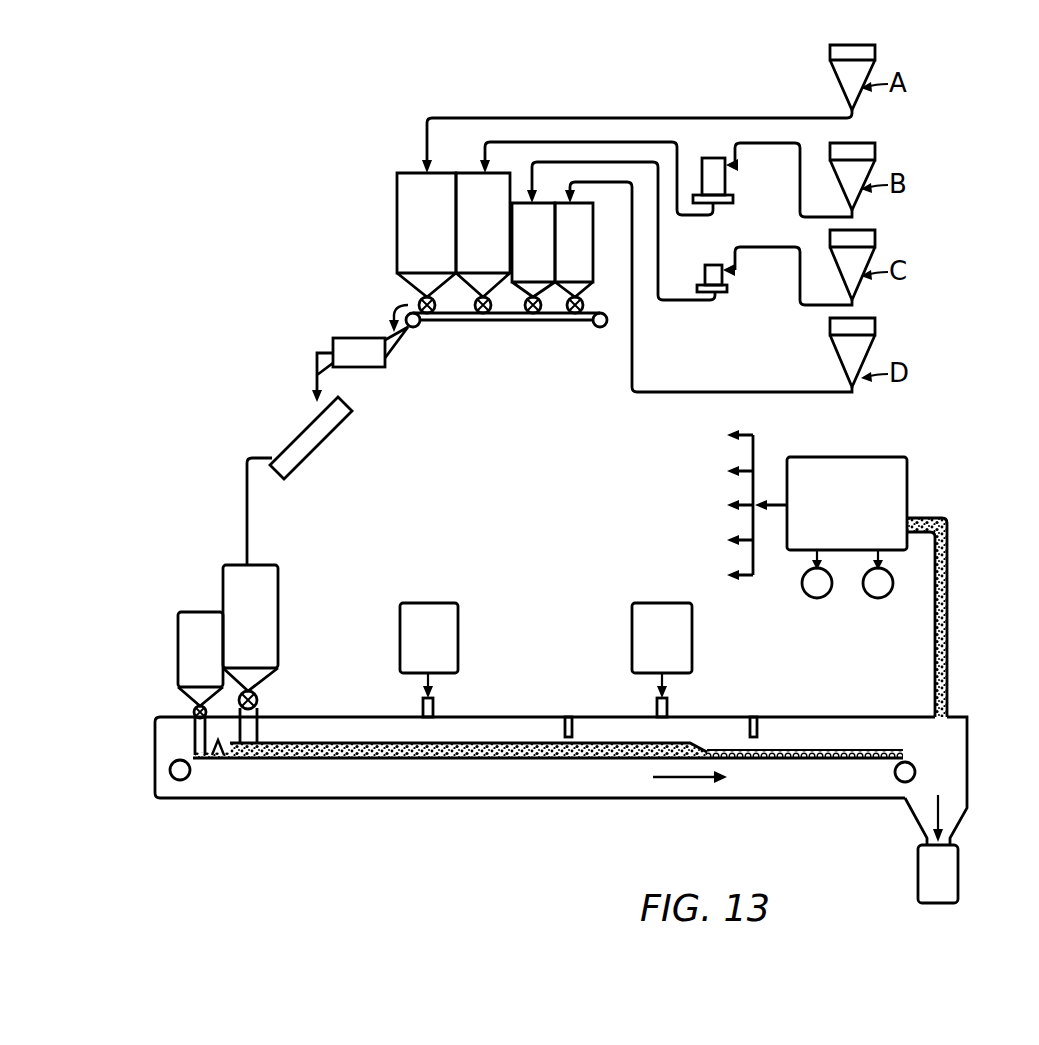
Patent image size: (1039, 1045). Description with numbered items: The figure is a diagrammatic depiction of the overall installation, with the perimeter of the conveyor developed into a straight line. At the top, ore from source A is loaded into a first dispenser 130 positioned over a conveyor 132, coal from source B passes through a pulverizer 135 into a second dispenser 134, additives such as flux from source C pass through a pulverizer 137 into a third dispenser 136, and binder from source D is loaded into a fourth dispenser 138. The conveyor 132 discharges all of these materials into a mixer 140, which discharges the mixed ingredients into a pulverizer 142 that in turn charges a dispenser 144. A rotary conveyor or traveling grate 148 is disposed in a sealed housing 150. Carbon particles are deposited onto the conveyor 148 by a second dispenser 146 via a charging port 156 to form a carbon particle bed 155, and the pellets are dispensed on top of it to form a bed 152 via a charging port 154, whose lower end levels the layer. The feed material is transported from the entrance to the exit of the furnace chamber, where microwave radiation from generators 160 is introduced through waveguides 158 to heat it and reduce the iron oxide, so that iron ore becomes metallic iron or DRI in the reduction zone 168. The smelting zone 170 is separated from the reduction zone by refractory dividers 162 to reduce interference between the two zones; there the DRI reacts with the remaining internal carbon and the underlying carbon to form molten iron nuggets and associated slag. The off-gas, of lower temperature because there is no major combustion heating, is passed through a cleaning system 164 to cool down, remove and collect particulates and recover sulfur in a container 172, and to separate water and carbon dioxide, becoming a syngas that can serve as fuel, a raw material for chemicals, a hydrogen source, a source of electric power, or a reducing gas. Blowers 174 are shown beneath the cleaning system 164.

The first dispenser 130 is at (445, 253).
The conveyor 132 is at (488, 322).
The second dispenser 134 is at (502, 253).
The pulverizer 135 is at (698, 158).
The third dispenser 136 is at (540, 265).
The pulverizer 137 is at (722, 292).
The fourth dispenser 138 is at (587, 265).
The mixer chute 140 is at (340, 342).
The pulverizer 142 is at (337, 433).
The dispenser 144 is at (265, 615).
The second dispenser 146 is at (188, 628).
The conveyor 148 is at (310, 762).
The sealed housing 150 is at (143, 757).
The bed 152 is at (345, 750).
The charging port 154 is at (283, 718).
The carbon particle bed 155 is at (212, 760).
The charging port 156 is at (193, 735).
The waveguide 158 is at (420, 713).
The microwave generator 160 is at (460, 607).
The refractory divider 162 is at (553, 720).
The off-gas cleaning system 164 is at (920, 478).
The reduction zone 168 is at (502, 728).
The smelting zone 170 is at (603, 737).
The container 172 is at (893, 590).
The blower 174 is at (818, 598).